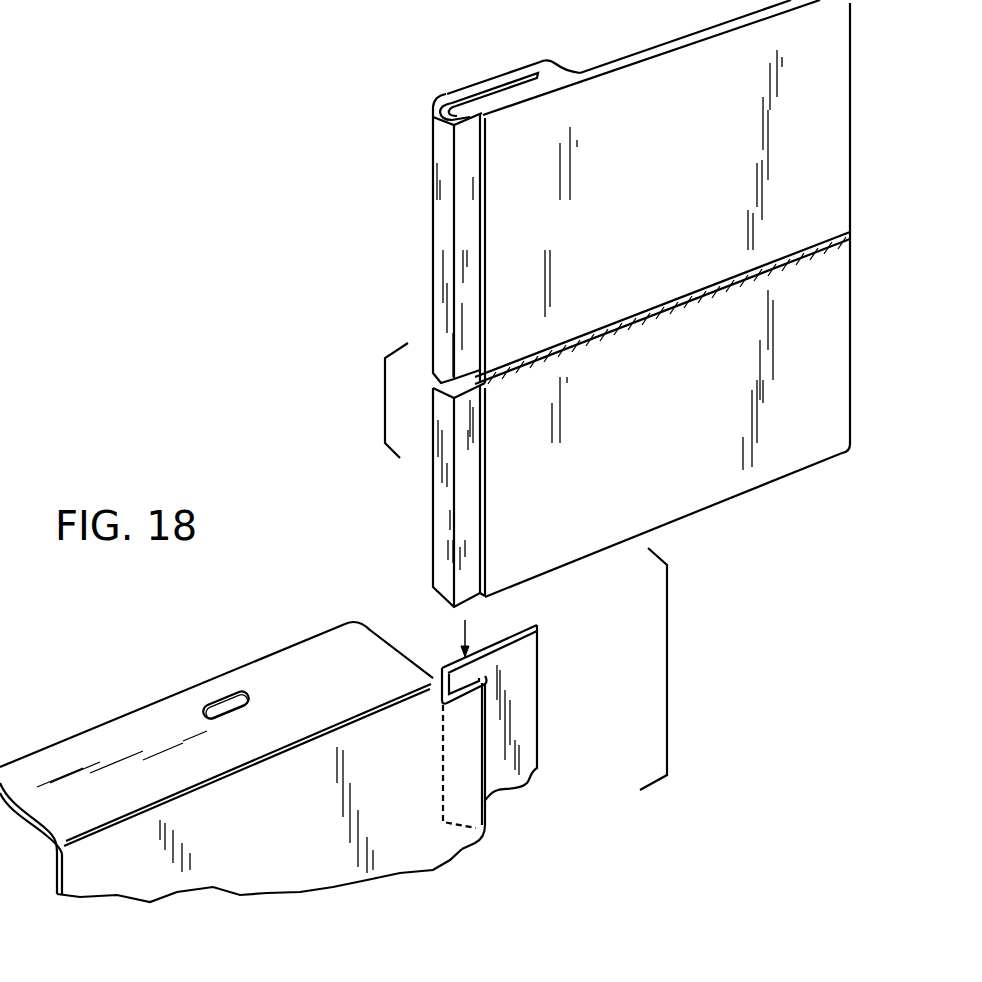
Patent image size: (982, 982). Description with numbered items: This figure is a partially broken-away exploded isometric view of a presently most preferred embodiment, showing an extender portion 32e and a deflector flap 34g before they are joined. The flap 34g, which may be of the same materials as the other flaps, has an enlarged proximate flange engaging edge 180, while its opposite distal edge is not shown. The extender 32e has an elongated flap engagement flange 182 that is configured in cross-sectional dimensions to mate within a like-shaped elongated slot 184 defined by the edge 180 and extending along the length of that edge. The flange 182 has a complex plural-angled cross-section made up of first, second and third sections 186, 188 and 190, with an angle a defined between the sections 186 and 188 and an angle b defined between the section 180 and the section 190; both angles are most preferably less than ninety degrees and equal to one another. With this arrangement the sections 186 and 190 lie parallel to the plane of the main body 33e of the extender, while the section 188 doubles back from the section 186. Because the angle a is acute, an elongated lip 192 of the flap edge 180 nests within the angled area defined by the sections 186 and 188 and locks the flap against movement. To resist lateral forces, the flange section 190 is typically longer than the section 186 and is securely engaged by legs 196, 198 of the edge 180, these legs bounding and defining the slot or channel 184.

The deflector flap 34g is at (717, 506).
The elongated slot 184 is at (515, 80).
The leg 196 is at (473, 88).
The leg 198 is at (472, 106).
The elongated lip 192 is at (450, 118).
The flange engaging edge 180 is at (437, 479).
The extender portion 32e is at (263, 872).
The main body 33e is at (122, 863).
The flap engagement flange 182 is at (515, 722).
The third section 190 is at (510, 662).
The second section 188 is at (438, 681).
The first section 186 is at (465, 705).
The angle a is at (449, 672).
The angle b is at (493, 648).